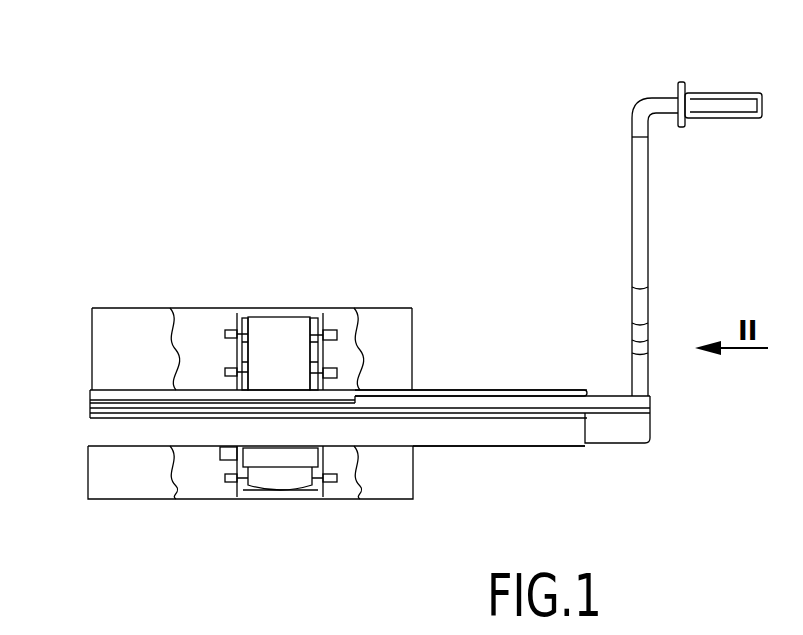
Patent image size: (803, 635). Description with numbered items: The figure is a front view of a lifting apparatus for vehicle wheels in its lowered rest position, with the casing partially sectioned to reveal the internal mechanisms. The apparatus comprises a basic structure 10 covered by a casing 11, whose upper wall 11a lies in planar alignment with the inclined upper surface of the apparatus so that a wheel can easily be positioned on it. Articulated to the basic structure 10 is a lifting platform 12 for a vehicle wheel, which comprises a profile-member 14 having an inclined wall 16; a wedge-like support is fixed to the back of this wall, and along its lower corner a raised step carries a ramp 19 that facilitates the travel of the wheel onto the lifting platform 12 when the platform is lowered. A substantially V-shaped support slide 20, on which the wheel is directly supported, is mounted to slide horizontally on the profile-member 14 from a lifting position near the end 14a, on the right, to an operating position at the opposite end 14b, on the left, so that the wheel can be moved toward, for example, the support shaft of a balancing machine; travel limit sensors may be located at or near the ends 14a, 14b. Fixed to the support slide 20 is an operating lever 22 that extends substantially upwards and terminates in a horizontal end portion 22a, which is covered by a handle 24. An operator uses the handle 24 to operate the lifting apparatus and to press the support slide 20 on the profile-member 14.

The basic structure 10 is at (386, 280).
The casing 11 is at (146, 304).
The upper wall of the casing 11a is at (397, 327).
The lifting platform 12 is at (467, 380).
The profile-member 14 is at (80, 416).
The end of the profile-member 14a is at (578, 447).
The opposite end of the profile-member 14b is at (98, 428).
The inclined wall 16 is at (112, 395).
The ramp 19 is at (463, 433).
The support slide 20 is at (527, 400).
The operating lever 22 is at (640, 243).
The horizontal end portion 22a is at (672, 97).
The handle 24 is at (718, 108).